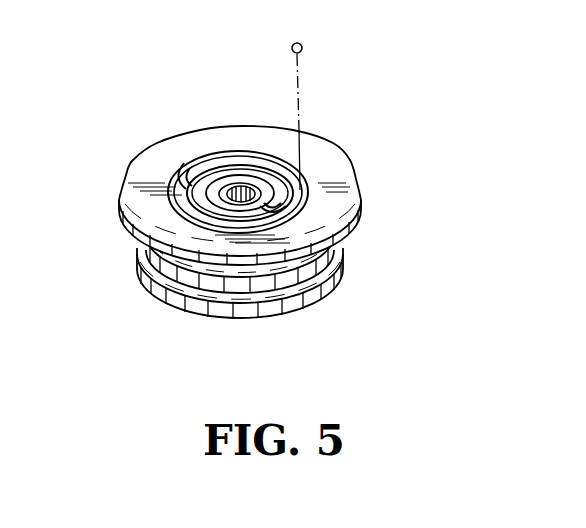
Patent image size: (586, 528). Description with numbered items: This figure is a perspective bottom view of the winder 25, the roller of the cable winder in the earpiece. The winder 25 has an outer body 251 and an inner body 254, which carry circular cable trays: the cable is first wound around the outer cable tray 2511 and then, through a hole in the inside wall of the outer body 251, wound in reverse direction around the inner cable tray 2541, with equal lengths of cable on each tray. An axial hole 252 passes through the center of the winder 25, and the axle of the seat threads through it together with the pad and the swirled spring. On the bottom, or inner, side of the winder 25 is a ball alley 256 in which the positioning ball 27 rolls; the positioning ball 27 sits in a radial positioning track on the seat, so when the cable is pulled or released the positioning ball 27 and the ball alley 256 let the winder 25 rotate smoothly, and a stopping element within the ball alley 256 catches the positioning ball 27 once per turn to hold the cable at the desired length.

The winder 25 is at (377, 198).
The outer body 251 is at (323, 163).
The outer cable tray 2511 is at (337, 228).
The axial hole 252 is at (233, 184).
The inner body 254 is at (178, 307).
The inner cable tray 2541 is at (332, 277).
The ball alley 256 is at (197, 160).
The positioning ball 27 is at (303, 43).